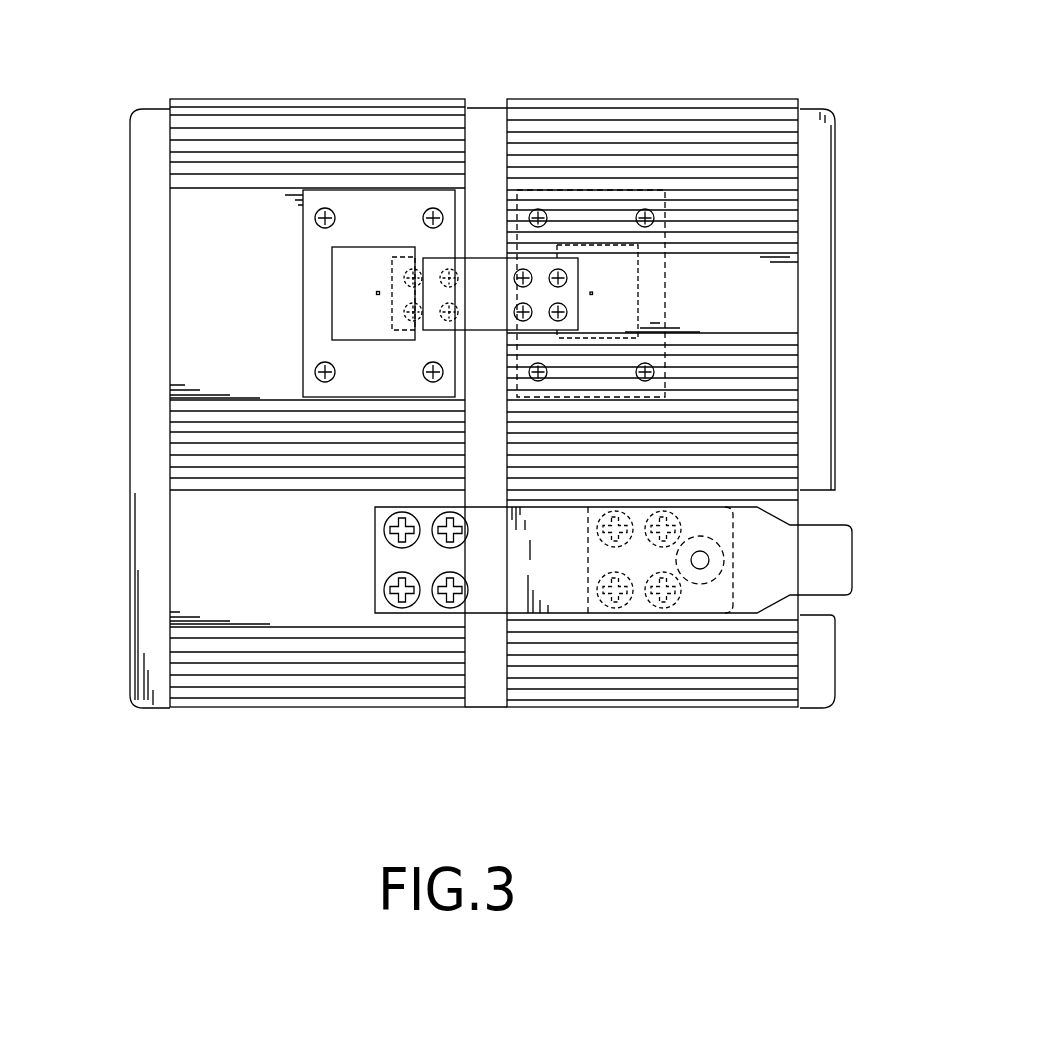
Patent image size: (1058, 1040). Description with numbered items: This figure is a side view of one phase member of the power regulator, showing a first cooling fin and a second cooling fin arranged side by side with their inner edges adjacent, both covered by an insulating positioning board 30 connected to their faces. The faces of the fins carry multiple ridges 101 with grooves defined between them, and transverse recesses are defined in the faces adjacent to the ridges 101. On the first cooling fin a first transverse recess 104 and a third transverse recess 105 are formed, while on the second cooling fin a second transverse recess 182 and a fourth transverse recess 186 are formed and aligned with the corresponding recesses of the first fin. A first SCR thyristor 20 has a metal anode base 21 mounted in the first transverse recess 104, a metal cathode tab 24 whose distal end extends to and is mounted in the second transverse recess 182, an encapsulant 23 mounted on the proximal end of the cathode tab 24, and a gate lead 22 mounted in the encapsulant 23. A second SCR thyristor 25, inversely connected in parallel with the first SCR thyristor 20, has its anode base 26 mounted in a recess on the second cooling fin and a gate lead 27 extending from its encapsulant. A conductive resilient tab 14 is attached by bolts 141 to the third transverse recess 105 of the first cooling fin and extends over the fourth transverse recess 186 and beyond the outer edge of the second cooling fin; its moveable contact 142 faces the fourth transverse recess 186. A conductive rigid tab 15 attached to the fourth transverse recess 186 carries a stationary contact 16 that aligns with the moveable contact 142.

The ridges 101 is at (217, 118).
The positioning board 30 is at (145, 158).
The first transverse recess 104 is at (223, 228).
The third transverse recess 105 is at (242, 575).
The first SCR thyristor 20 is at (326, 201).
The anode base 21 is at (357, 202).
The gate lead 22 is at (343, 278).
The encapsulant 23 is at (378, 293).
The cathode tab 24 is at (397, 270).
The second SCR thyristor 25 is at (595, 180).
The anode base 26 is at (630, 197).
The gate lead 27 is at (620, 288).
The second transverse recess 182 is at (765, 308).
The fourth transverse recess 186 is at (785, 505).
The conductive resilient tab 14 is at (594, 635).
The bolts 141 is at (393, 597).
The moveable contact 142 is at (695, 587).
The conductive rigid tab 15 is at (707, 593).
The stationary contact 16 is at (727, 553).